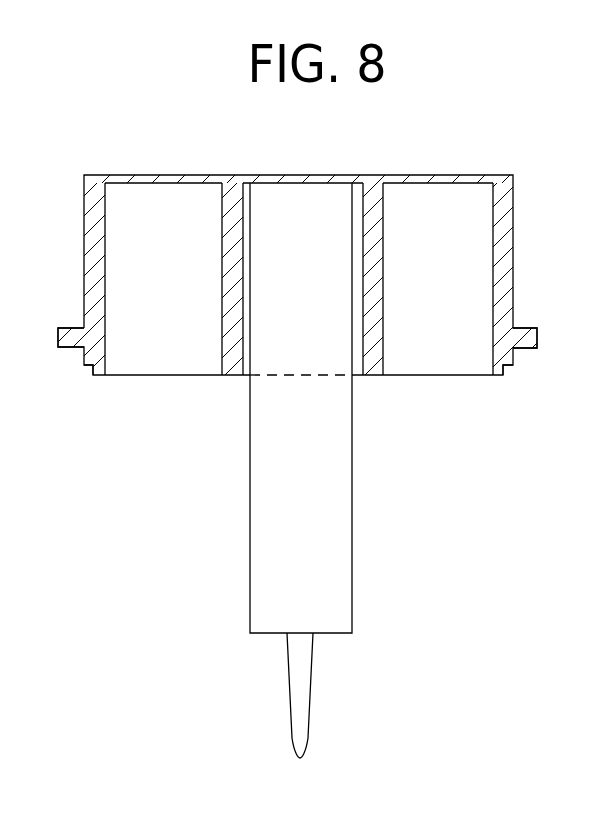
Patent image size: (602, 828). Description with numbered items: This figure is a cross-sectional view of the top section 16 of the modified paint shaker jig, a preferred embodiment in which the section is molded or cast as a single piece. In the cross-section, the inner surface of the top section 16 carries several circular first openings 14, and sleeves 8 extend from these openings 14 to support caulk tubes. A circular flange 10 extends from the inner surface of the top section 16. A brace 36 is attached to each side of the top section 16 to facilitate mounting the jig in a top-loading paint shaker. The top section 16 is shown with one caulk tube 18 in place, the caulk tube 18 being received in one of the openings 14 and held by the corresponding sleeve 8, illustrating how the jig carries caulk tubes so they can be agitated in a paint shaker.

The top section 16 is at (58, 199).
The sleeve 8 is at (105, 197).
The first opening 14 is at (105, 263).
The brace 36 is at (68, 349).
The circular flange 10 is at (97, 377).
The caulk tube 18 is at (250, 514).